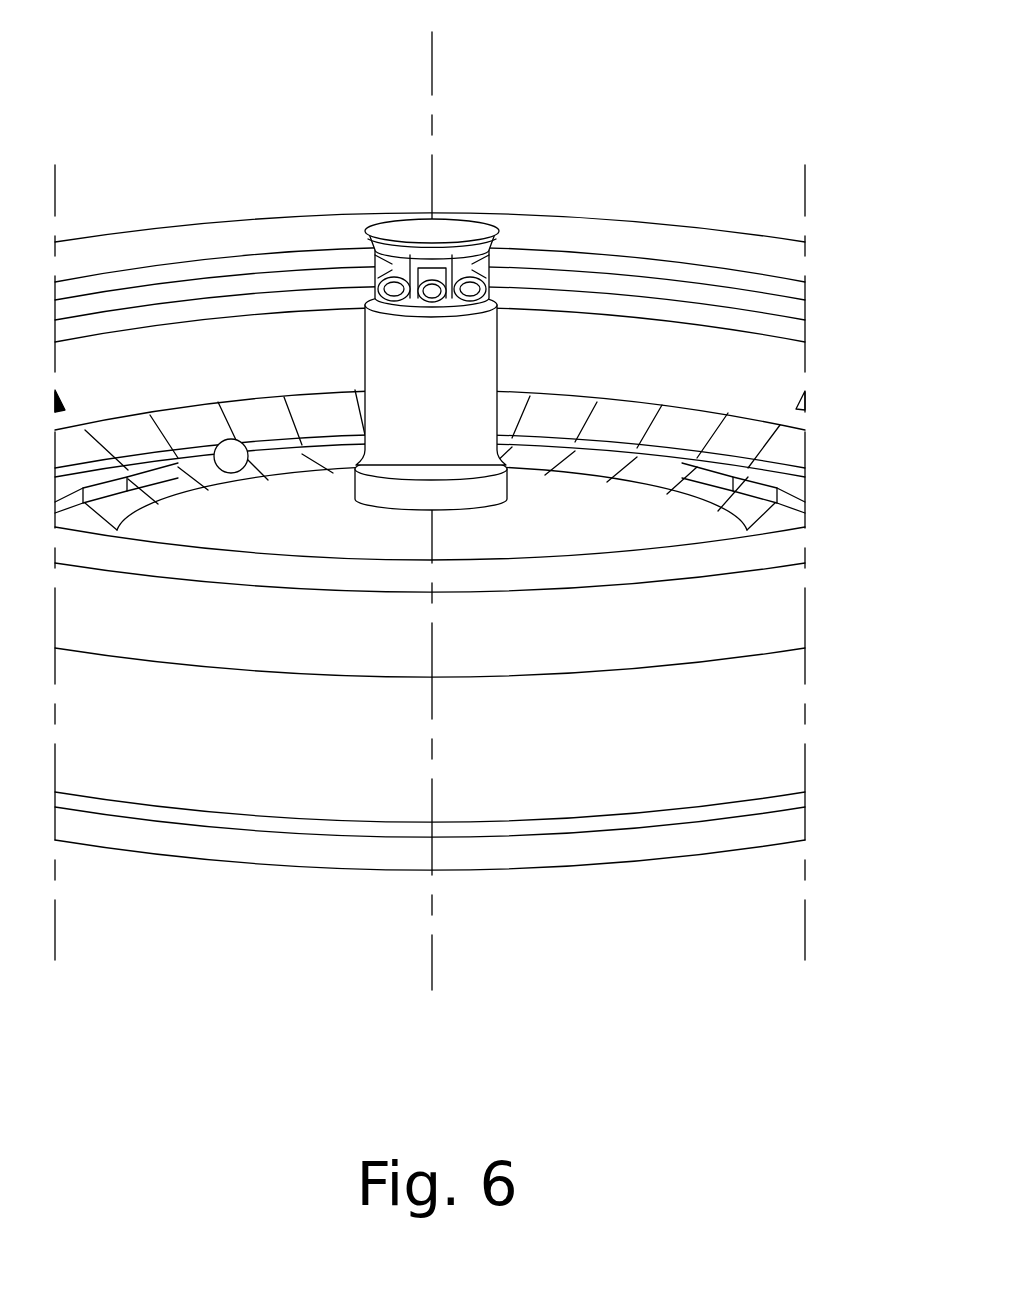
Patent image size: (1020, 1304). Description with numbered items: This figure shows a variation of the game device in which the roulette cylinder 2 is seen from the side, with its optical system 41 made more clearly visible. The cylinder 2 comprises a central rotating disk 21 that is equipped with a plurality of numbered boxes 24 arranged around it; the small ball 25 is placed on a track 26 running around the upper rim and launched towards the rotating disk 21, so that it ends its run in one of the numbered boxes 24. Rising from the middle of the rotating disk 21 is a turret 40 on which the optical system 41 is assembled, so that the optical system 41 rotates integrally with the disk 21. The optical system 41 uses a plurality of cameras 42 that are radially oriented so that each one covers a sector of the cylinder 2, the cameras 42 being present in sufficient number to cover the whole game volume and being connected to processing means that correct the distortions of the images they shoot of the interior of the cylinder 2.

The roulette cylinder 2 is at (685, 936).
The central rotating disk 21 is at (790, 413).
The numbered boxes 24 is at (632, 524).
The small ball 25 is at (232, 452).
The track 26 is at (140, 298).
The turret 40 is at (383, 345).
The optical system 41 is at (510, 131).
The cameras 42 is at (490, 280).